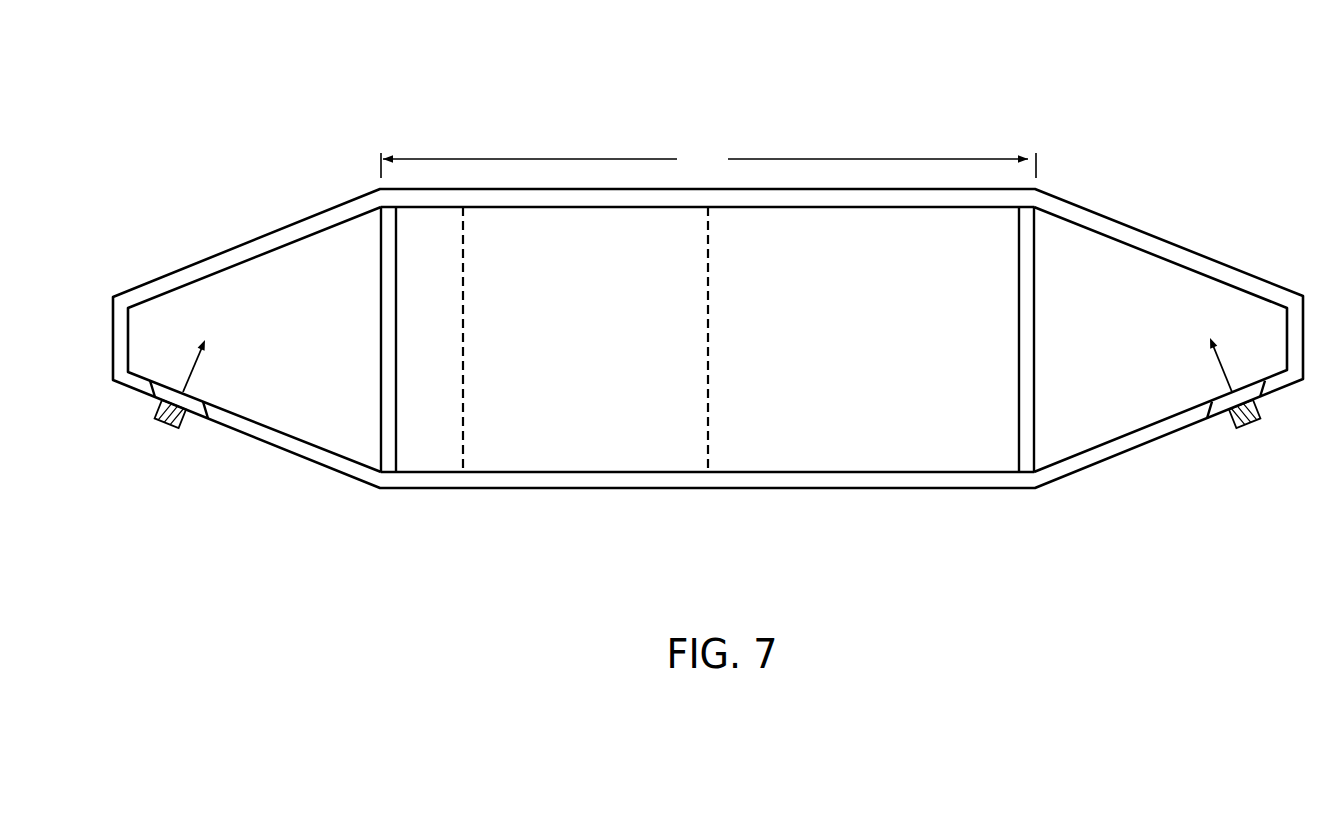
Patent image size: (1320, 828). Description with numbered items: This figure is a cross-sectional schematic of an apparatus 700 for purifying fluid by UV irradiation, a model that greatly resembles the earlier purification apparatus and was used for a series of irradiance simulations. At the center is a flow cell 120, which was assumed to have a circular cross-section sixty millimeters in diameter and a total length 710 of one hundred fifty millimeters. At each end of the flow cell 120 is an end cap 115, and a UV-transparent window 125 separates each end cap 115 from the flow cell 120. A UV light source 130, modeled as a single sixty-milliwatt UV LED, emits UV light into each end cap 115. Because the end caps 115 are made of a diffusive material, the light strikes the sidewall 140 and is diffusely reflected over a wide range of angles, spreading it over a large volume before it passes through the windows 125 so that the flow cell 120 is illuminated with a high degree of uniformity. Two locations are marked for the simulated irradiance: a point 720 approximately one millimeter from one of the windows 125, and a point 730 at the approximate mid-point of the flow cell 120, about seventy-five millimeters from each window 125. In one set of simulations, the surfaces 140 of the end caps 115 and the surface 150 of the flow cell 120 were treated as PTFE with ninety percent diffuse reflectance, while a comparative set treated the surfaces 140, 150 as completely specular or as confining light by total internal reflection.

The apparatus 700 is at (366, 112).
The total length 710 is at (708, 162).
The sidewall 140 is at (348, 231).
The UV light source 130 is at (163, 428).
The end cap 115 is at (282, 440).
The UV-transparent window 125 is at (386, 438).
The flow cell 120 is at (578, 430).
The point 720 is at (466, 422).
The point 730 is at (712, 422).
The surface 150 is at (880, 465).